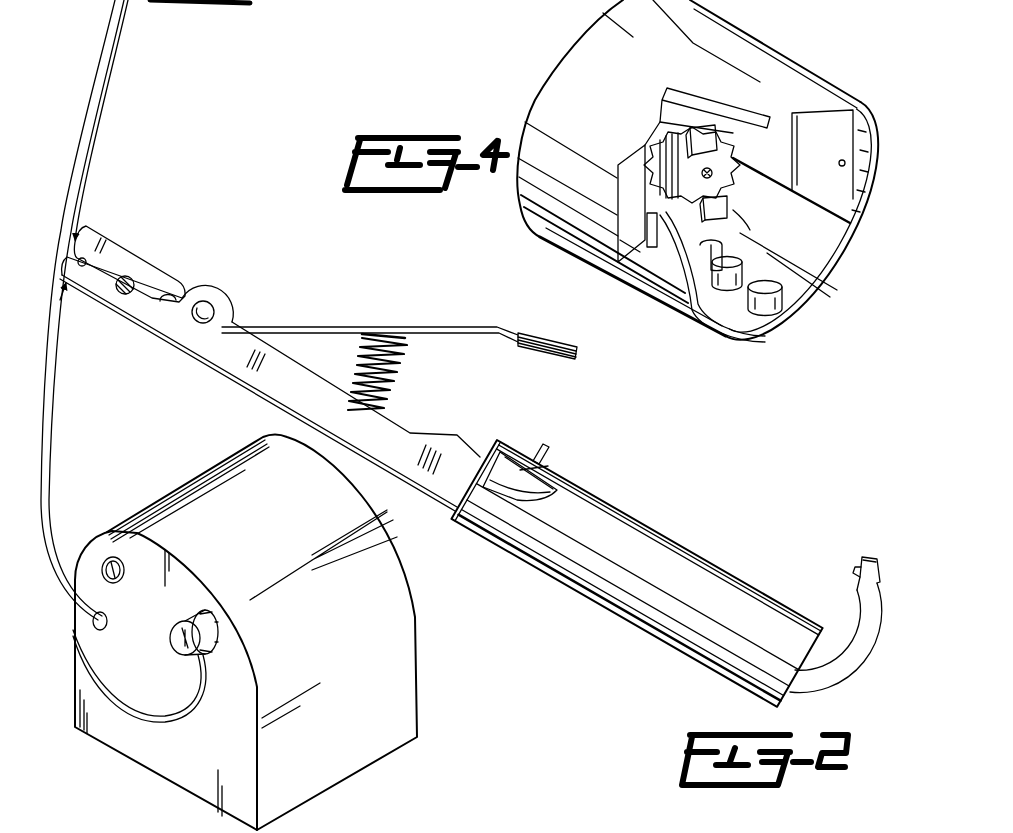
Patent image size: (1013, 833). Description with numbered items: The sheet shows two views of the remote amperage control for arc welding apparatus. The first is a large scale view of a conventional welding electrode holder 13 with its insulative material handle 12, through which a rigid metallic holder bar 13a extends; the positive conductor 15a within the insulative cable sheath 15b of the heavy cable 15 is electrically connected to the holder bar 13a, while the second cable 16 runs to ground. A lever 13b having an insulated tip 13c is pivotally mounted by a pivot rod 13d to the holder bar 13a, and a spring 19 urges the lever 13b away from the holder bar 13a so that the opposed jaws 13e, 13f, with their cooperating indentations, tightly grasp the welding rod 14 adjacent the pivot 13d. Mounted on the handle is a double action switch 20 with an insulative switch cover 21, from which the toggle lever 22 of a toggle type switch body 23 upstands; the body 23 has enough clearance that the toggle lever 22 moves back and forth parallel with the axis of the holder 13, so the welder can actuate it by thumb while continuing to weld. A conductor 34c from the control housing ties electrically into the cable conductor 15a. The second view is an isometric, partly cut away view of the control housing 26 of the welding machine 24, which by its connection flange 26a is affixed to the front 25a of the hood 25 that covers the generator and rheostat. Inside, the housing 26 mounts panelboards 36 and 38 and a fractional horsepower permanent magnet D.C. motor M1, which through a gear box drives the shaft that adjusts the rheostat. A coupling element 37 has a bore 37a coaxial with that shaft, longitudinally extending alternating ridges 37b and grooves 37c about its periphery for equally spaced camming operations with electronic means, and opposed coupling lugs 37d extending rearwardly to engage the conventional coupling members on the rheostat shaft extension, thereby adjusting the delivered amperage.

In FIG. 2, the insulative material handle 12 is at (637, 548).
In FIG. 2, the welding electrode holder 13 is at (318, 381).
In FIG. 2, the holder bar 13a is at (397, 460).
In FIG. 2, the lever 13b is at (430, 327).
In FIG. 2, the insulated tip 13c is at (549, 335).
In FIG. 2, the pivot rod 13d is at (212, 302).
In FIG. 2, the jaw 13e is at (124, 315).
In FIG. 2, the holder bar jaw 13f is at (125, 258).
In FIG. 2, the welding rod 14 is at (138, 280).
In FIG. 2, the cable 15 is at (170, 720).
In FIG. 4, the cable 15 is at (712, 277).
In FIG. 2, the positive conductor 15a is at (867, 557).
In FIG. 2, the insulative cable sheath 15b is at (853, 587).
In FIG. 2, the cable 16 is at (59, 402).
In FIG. 2, the spring 19 is at (403, 363).
In FIG. 2, the double action switch 20 is at (513, 432).
In FIG. 2, the switch cover 21 is at (558, 495).
In FIG. 2, the toggle lever 22 is at (545, 452).
In FIG. 2, the toggle type switch body 23 is at (540, 467).
In FIG. 2, the welding machine 24 is at (246, 633).
In FIG. 2, the hood 25 is at (355, 670).
In FIG. 2, the front of the welding machine hood 25a is at (243, 736).
In FIG. 2, the control housing 26 is at (177, 615).
In FIG. 4, the control housing 26 is at (777, 50).
In FIG. 2, the connection flange 26a is at (197, 613).
In FIG. 4, the conductor 34c is at (444, 0).
In FIG. 4, the panelboard 36 is at (630, 223).
In FIG. 4, the coupling element 37 is at (699, 170).
In FIG. 4, the bore 37a is at (727, 208).
In FIG. 4, the ridges 37b is at (680, 140).
In FIG. 4, the grooves 37c is at (673, 158).
In FIG. 4, the coupling lugs 37d is at (737, 227).
In FIG. 4, the panelboard 38 is at (830, 147).
In FIG. 4, the motor M1 is at (633, 177).